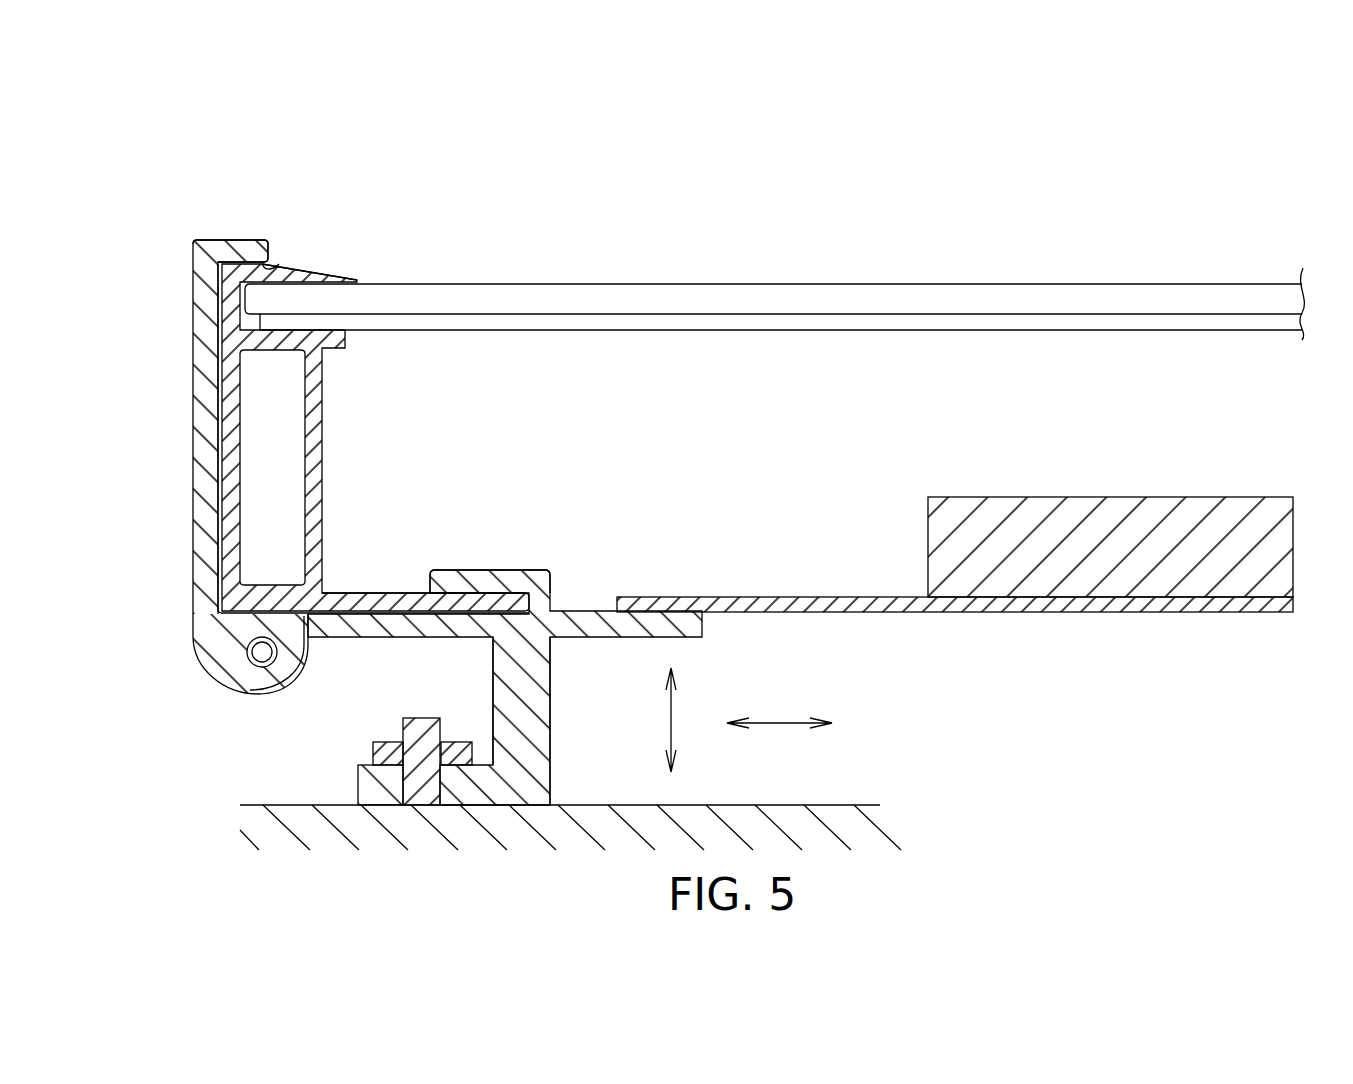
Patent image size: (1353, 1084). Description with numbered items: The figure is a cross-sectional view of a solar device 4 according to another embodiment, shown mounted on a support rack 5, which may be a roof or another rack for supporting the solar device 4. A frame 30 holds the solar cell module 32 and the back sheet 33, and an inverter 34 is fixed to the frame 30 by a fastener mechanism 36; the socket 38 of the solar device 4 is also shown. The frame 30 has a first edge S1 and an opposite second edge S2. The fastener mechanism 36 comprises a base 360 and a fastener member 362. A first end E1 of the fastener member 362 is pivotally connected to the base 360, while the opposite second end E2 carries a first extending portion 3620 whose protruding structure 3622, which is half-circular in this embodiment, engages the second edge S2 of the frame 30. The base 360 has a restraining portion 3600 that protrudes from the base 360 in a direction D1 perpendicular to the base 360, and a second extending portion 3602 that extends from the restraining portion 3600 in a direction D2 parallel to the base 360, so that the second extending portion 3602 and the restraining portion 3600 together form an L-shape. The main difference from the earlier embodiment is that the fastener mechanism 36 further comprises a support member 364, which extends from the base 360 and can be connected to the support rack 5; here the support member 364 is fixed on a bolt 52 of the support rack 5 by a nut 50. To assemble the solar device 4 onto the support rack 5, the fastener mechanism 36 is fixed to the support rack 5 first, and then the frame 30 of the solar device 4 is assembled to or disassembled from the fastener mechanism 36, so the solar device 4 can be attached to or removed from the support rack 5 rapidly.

The solar device 4 is at (1135, 195).
The support rack 5 is at (838, 805).
The frame 30 is at (330, 462).
The solar cell module 32 is at (708, 290).
The back sheet 33 is at (884, 322).
The inverter 34 is at (1040, 505).
The fastener mechanism 36 is at (160, 640).
The socket 38 is at (815, 612).
The nut 50 is at (376, 744).
The bolt 52 is at (413, 717).
The base 360 is at (447, 625).
The fastener member 362 is at (193, 404).
The support member 364 is at (537, 702).
The restraining portion 3600 is at (551, 592).
The second extending portion 3602 is at (490, 570).
The first extending portion 3620 is at (248, 240).
The protruding structure 3622 is at (264, 262).
The first edge S1 is at (383, 603).
The second edge S2 is at (288, 263).
The first end E1 is at (243, 695).
The second end E2 is at (218, 235).
The direction D1 is at (693, 720).
The direction D2 is at (779, 740).